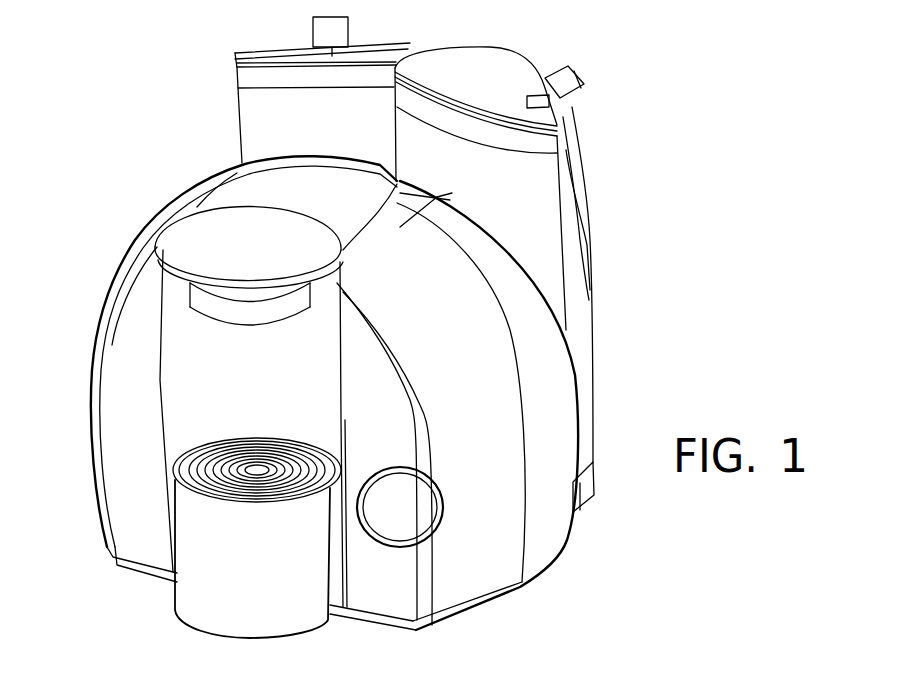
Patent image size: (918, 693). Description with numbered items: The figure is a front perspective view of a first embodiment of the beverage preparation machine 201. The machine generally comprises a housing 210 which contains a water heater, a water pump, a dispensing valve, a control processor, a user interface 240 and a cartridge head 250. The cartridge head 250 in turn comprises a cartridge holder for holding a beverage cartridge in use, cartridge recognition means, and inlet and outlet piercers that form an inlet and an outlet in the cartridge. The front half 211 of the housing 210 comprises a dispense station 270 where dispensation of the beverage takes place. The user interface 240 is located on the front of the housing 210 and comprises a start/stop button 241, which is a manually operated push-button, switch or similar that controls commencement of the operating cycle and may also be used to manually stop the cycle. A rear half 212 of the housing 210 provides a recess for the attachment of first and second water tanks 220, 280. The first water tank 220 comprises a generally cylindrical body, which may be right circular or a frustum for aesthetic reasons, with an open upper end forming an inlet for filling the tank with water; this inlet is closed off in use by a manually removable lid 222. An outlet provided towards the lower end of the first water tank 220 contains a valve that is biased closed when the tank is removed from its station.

The beverage preparation machine 201 is at (630, 389).
The housing 210 is at (480, 581).
The front half 211 is at (120, 508).
The rear half 212 is at (550, 535).
The first water tank 220 is at (575, 293).
The lid 222 is at (473, 90).
The user interface 240 is at (373, 556).
The start/stop button 241 is at (410, 512).
The cartridge head 250 is at (178, 299).
The dispense station 270 is at (189, 403).
The second water tank 280 is at (250, 128).